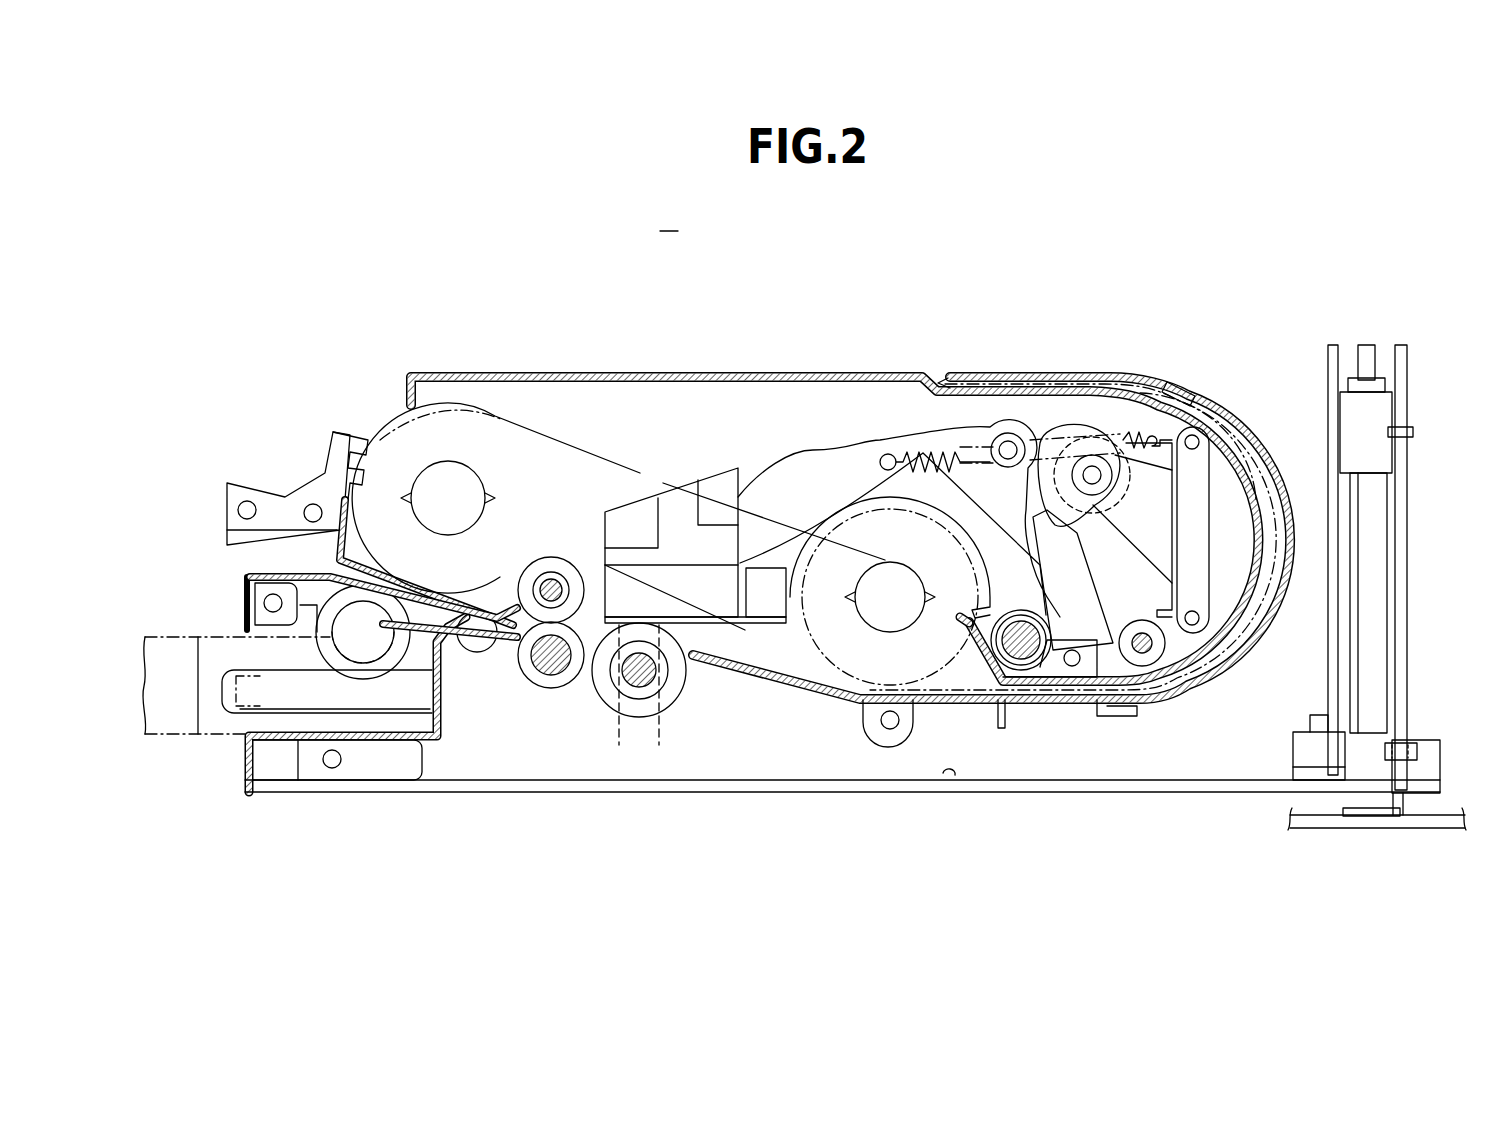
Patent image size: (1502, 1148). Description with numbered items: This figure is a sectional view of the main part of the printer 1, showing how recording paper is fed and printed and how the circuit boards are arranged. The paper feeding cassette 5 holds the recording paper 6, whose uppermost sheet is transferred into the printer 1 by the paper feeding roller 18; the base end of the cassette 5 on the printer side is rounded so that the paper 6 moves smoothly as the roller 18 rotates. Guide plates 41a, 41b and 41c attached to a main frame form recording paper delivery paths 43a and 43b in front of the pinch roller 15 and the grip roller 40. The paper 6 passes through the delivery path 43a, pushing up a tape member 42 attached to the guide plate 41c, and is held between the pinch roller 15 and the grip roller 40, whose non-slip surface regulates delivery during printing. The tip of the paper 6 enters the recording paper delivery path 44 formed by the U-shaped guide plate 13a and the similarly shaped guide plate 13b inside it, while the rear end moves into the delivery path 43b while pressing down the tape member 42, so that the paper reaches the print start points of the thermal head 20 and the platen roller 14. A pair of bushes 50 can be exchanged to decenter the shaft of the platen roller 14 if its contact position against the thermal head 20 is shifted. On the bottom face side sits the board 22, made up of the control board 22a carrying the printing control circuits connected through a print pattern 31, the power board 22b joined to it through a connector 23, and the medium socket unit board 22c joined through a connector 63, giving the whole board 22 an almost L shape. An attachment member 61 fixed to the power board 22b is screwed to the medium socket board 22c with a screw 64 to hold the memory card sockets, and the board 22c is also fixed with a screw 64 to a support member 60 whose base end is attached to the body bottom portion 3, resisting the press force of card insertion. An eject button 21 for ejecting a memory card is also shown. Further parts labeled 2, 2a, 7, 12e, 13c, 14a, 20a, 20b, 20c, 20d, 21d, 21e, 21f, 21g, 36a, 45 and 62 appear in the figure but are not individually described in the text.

The printer 1 is at (658, 300).
The frame 2 is at (779, 372).
The frame bracket 2a is at (240, 635).
The body bottom portion 3 is at (1320, 824).
The paper feeding cassette 5 is at (212, 643).
The recording paper 6 is at (243, 697).
The platen roller 7 is at (492, 430).
The link 12e is at (1197, 467).
The guide plate 13a is at (1250, 648).
The guide plate 13b is at (1243, 572).
The guide bracket 13c is at (975, 670).
The platen roller 14 is at (687, 683).
The feed roller shaft 14a is at (643, 677).
The pinch roller 15 is at (553, 588).
The paper feeding roller 18 is at (365, 637).
The thermal head 20 is at (688, 490).
The head lever 20a is at (808, 485).
The lever roller 20b is at (1030, 660).
The lever end 20c is at (985, 381).
The lever pivot 20d is at (921, 457).
The eject button 21 is at (1368, 345).
The cam 21d is at (1067, 440).
The cam pivot 21e is at (1072, 513).
The cam arm 21f is at (1077, 577).
The cam roller 21g is at (1143, 650).
The board 22 is at (653, 800).
The control board 22a is at (810, 793).
The power board 22b is at (1327, 362).
The medium socket unit board 22c is at (1405, 490).
The connector 23 is at (1307, 750).
The print pattern 31 is at (948, 778).
The mounting tab 36a is at (1178, 775).
The grip roller 40 is at (552, 667).
The guide plate 41a is at (497, 605).
The guide plate 41b is at (437, 695).
The guide plate 41c is at (288, 573).
The tape member 42 is at (468, 640).
The recording paper delivery path 43a is at (517, 630).
The recording paper delivery path 43b is at (398, 577).
The recording paper delivery path 44 is at (1267, 520).
The upper guide wall 45 is at (1015, 376).
The bushes 50 is at (639, 699).
The support member 60 is at (1398, 815).
The attachment member 61 is at (1352, 412).
The motor shaft housing 62 is at (1368, 594).
The connector 63 is at (1427, 738).
The screw 64 is at (1417, 427).